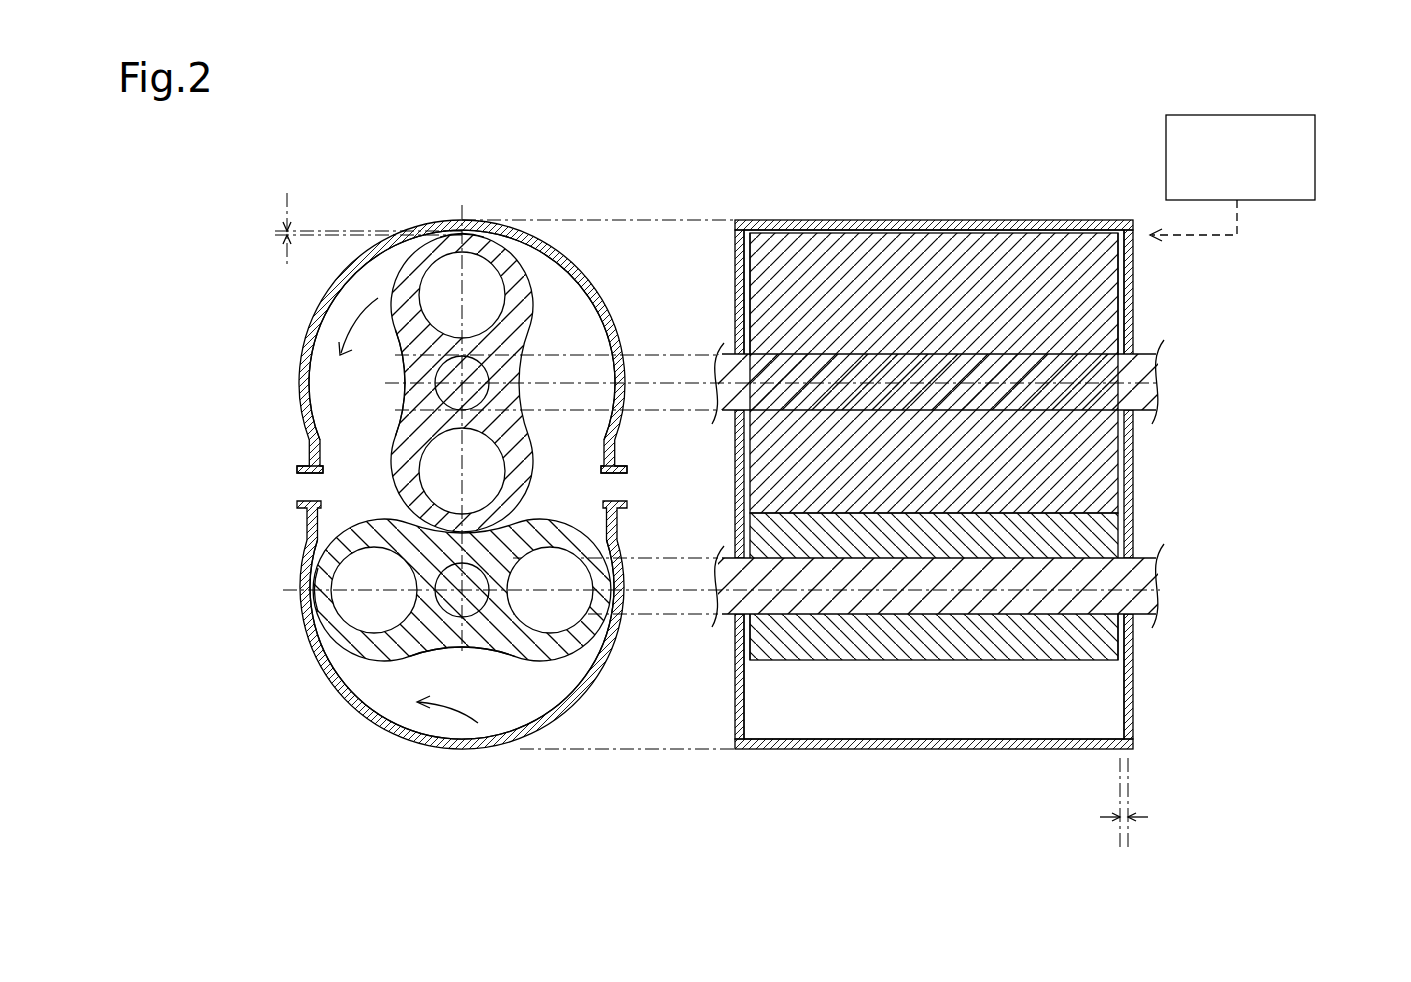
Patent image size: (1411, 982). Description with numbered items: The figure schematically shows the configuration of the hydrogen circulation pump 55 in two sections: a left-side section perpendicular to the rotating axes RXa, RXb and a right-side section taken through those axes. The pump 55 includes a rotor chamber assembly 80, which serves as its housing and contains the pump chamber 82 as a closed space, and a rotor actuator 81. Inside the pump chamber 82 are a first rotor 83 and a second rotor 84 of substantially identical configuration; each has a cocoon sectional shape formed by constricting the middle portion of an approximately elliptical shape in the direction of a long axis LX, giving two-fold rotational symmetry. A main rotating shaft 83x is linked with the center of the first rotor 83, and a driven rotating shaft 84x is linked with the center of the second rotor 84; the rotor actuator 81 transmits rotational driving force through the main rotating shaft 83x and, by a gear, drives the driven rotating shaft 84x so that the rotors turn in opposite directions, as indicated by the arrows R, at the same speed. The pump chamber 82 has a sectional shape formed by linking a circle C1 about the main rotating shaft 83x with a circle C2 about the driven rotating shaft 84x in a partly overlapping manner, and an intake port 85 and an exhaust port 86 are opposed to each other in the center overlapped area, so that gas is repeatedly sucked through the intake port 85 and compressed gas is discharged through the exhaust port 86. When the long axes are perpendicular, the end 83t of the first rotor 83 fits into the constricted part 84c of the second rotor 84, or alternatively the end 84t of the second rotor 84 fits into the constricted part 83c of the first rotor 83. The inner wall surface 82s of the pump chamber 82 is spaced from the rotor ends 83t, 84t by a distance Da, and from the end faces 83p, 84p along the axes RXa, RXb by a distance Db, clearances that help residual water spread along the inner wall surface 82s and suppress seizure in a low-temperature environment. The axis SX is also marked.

The hydrogen circulation pump 55 is at (372, 204).
The rotor chamber assembly 80 is at (734, 486).
The rotor actuator 81 is at (1316, 160).
The pump chamber 82 is at (581, 497).
The inner wall surface 82s is at (592, 305).
The first rotor 83 is at (781, 359).
The end of the first rotor 83t is at (466, 232).
The main rotating shaft 83x is at (437, 380).
The constricted part of the first rotor 83c is at (411, 398).
The end face of the first rotor 83p is at (748, 318).
The second rotor 84 is at (741, 593).
The driven rotating shaft 84x is at (428, 525).
The end of the second rotor 84t is at (310, 582).
The constricted part of the second rotor 84c is at (468, 643).
The end face of the second rotor 84p is at (746, 630).
The intake port 85 is at (617, 468).
The exhaust port 86 is at (304, 468).
The circle about the main rotating shaft C1 is at (619, 331).
The circle about the driven rotating shaft C2 is at (594, 690).
The long axis LX is at (461, 216).
The shaft center axis SX is at (531, 384).
The rotating axis of the first rotor RXa is at (437, 403).
The rotating axis of the second rotor RXb is at (440, 618).
The rotation direction R is at (412, 521).
The distance between inner wall surface and rotor end Da is at (354, 230).
The distance between rotor end faces and inner wall surface Db is at (1110, 803).